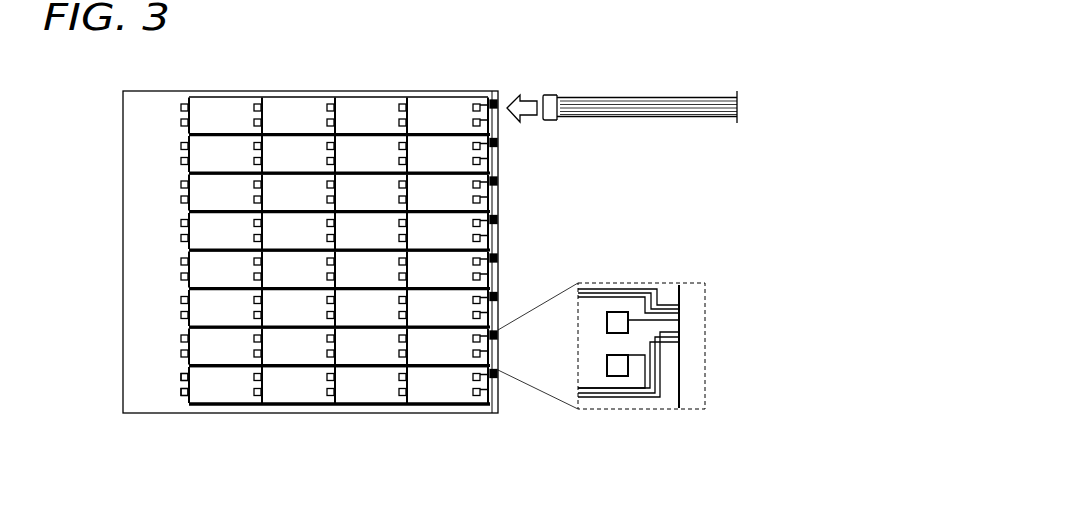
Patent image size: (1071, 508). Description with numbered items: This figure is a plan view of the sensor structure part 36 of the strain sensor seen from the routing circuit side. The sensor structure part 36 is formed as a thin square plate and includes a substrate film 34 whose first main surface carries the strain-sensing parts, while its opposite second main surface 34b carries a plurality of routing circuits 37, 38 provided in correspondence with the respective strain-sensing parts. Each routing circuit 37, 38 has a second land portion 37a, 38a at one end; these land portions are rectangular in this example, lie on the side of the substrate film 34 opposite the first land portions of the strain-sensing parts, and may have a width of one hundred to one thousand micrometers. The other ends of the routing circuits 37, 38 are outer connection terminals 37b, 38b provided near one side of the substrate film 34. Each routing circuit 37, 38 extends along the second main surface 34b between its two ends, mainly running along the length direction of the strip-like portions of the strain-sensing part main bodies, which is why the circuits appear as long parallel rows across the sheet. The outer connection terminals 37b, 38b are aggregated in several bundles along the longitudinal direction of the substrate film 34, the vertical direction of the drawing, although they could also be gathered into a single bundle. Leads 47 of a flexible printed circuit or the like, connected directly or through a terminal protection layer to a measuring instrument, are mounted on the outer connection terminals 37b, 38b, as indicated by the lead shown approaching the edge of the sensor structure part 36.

The substrate film 34 is at (339, 226).
The second main surface 34b is at (248, 96).
The sensor structure part 36 is at (449, 78).
The routing circuit 37 is at (242, 407).
The second land portion 37a is at (183, 393).
The outer connection terminal 37b is at (682, 325).
The routing circuit 38 is at (215, 368).
The second land portion 38a is at (182, 379).
The outer connection terminal 38b is at (668, 290).
The leads 47 is at (645, 118).